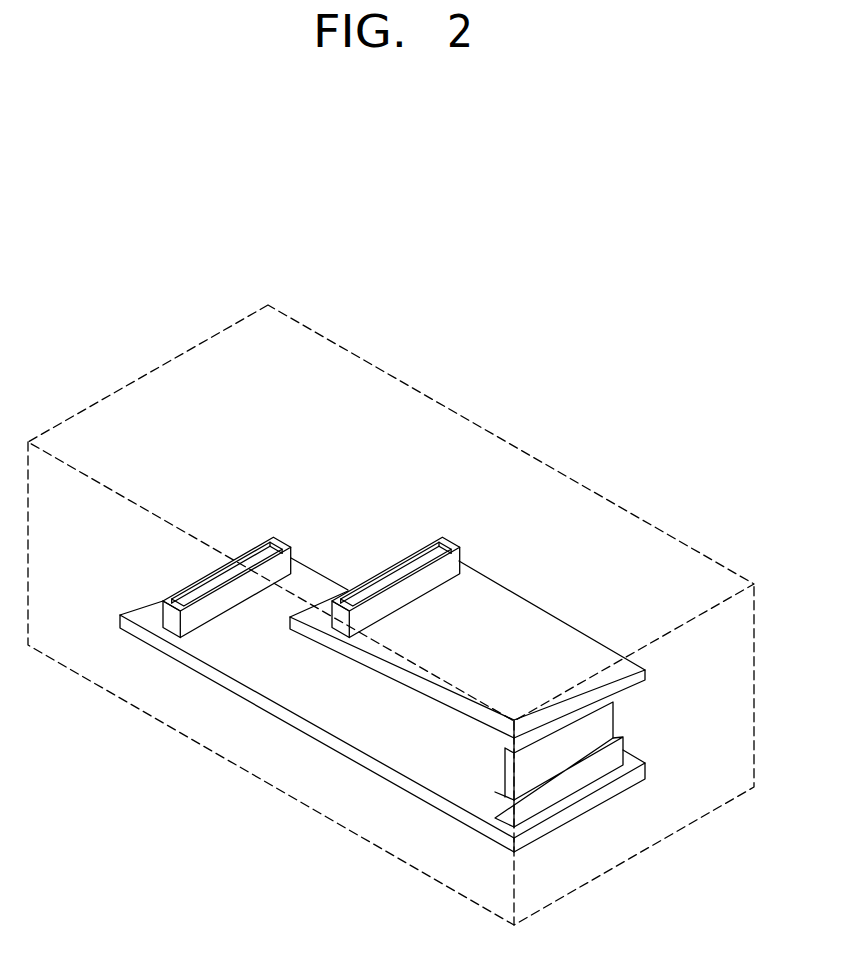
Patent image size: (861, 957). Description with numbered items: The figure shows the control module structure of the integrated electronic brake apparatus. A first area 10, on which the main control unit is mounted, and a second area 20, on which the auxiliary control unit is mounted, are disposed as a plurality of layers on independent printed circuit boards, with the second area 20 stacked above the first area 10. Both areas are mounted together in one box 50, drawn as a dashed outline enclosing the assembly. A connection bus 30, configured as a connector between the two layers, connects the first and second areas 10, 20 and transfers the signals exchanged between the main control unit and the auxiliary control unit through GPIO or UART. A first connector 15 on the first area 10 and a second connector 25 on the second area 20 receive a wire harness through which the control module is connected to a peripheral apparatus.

The first area 10 is at (335, 717).
The first connector 15 is at (257, 556).
The second area 20 is at (507, 614).
The second connector 25 is at (408, 565).
The connection bus 30 is at (535, 762).
The box 50 is at (663, 533).